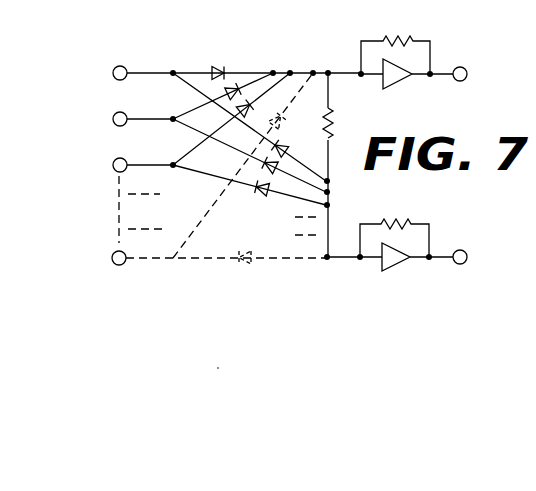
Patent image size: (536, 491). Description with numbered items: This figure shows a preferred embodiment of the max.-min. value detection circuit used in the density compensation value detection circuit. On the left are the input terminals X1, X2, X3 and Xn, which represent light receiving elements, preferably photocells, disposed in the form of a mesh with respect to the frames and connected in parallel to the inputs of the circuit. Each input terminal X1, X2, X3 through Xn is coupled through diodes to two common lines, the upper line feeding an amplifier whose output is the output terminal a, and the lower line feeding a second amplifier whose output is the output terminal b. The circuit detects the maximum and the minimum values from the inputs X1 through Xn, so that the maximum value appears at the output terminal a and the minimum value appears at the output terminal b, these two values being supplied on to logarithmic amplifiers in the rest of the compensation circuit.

The input terminal X1 is at (121, 73).
The input terminal X2 is at (121, 119).
The input terminal X3 is at (121, 165).
The input terminal Xn is at (196, 223).
The output terminal a is at (422, 62).
The output terminal b is at (406, 245).